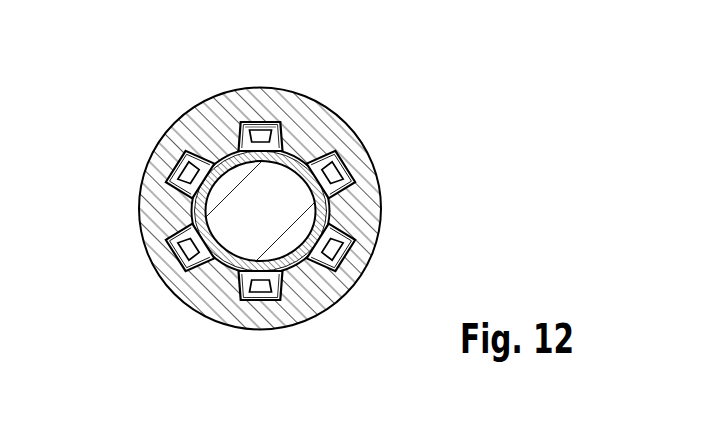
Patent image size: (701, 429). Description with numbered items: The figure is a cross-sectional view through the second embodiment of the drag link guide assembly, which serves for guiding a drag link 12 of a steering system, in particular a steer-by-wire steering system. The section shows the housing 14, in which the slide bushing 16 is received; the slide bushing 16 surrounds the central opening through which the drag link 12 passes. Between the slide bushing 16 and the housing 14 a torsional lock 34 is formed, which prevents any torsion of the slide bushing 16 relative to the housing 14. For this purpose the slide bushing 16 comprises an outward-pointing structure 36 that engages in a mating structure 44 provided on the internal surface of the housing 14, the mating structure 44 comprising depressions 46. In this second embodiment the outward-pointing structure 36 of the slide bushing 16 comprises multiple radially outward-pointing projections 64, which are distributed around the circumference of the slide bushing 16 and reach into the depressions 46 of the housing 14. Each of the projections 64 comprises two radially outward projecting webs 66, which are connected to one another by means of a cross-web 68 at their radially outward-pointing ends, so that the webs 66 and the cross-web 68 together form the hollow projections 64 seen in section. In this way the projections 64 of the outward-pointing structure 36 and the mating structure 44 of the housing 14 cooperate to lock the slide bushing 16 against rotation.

The drag link 12 is at (293, 208).
The housing 14 is at (345, 135).
The slide bushing 16 is at (300, 287).
The torsional lock 34 is at (206, 146).
The outward-pointing structure 36 is at (257, 117).
The mating structure 44 is at (292, 119).
The depressions 46 is at (346, 162).
The radially outward-pointing projections 64 is at (345, 176).
The radially outward projecting webs 66 is at (194, 222).
The cross-web 68 is at (178, 245).